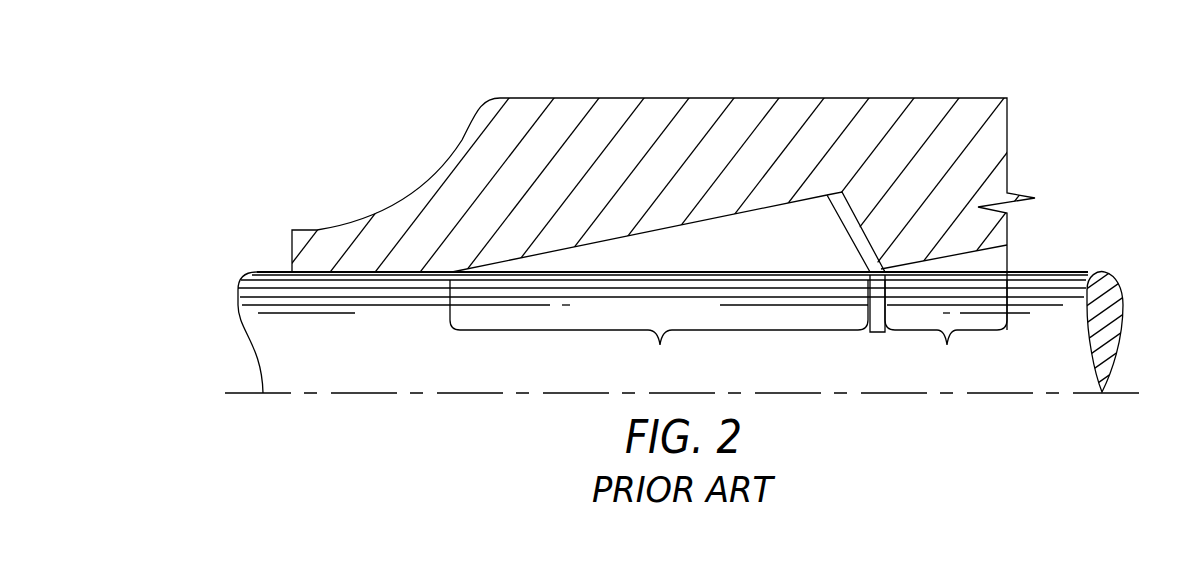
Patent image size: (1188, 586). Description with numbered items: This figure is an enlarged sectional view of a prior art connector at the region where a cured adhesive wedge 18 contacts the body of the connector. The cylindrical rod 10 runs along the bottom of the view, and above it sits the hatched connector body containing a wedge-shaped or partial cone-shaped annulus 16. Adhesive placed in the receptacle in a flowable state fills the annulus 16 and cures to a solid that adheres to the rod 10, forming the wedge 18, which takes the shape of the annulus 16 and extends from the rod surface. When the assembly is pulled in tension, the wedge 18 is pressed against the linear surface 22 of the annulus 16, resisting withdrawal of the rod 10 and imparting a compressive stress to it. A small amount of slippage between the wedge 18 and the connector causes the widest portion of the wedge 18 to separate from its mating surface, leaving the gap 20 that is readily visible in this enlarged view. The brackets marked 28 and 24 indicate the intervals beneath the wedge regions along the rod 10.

The cylindrical rod 10 is at (1078, 278).
The annulus 16 is at (614, 238).
The wedge 18 is at (507, 263).
The gap 20 is at (866, 238).
The linear surface 22 is at (728, 220).
The sealing land 24 is at (878, 333).
The bond region 28 is at (659, 331).